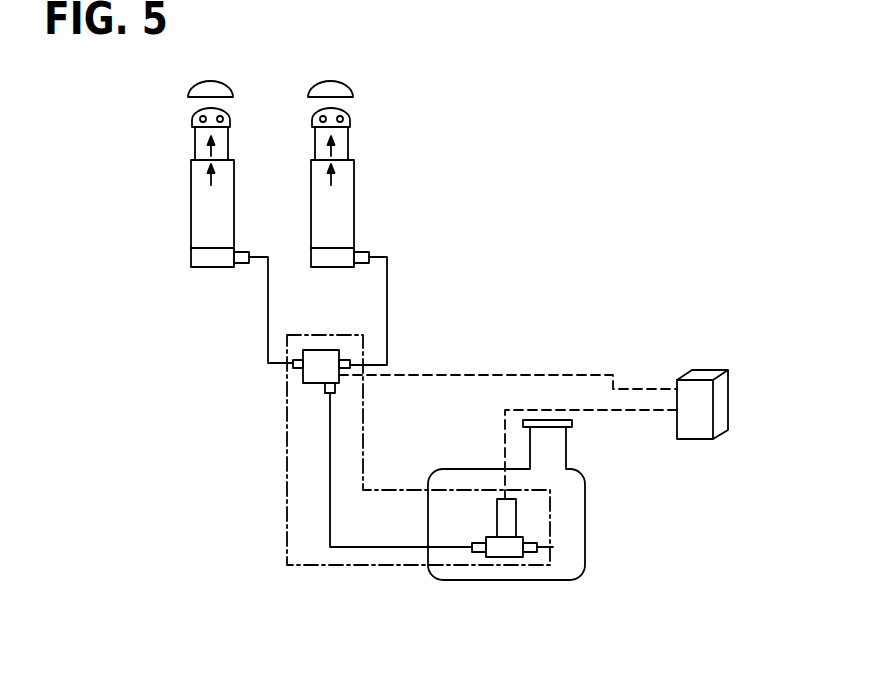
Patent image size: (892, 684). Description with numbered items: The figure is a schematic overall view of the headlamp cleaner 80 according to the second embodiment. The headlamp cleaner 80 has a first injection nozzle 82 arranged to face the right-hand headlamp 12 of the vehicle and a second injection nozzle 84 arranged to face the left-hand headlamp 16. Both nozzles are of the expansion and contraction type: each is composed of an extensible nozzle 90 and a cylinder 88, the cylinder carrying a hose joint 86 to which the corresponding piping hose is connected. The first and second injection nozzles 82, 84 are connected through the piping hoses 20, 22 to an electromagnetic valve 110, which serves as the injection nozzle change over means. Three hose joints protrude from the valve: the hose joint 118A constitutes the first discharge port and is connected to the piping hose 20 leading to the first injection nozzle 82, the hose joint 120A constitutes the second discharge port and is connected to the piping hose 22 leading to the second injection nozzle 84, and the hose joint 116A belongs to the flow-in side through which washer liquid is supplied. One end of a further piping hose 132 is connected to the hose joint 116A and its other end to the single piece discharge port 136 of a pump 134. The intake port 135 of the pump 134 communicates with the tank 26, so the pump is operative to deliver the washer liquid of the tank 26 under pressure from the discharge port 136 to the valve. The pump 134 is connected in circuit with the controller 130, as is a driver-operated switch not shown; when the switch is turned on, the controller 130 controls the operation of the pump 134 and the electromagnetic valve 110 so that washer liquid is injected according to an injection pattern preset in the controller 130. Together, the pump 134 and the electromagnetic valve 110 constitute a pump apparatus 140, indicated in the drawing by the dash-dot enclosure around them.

The right-hand headlamp 12 is at (327, 88).
The left-hand headlamp 16 is at (205, 88).
The piping hose 20 is at (388, 297).
The piping hose 22 is at (268, 297).
The tank 26 is at (576, 508).
The headlamp cleaner 80 is at (564, 246).
The first injection nozzle 82 is at (362, 200).
The second injection nozzle 84 is at (241, 216).
The hose joint 86 is at (244, 264).
The cylinder 88 is at (222, 182).
The extensible nozzle 90 is at (224, 140).
The electromagnetic valve 110 is at (330, 345).
The hose joint 116A is at (336, 390).
The hose joint 118A is at (351, 362).
The hose joint 120A is at (295, 370).
The controller 130 is at (726, 392).
The piping hose 132 is at (386, 549).
The pump 134 is at (502, 566).
The intake port 135 is at (553, 547).
The discharge port 136 is at (481, 556).
The pump apparatus 140 is at (287, 456).